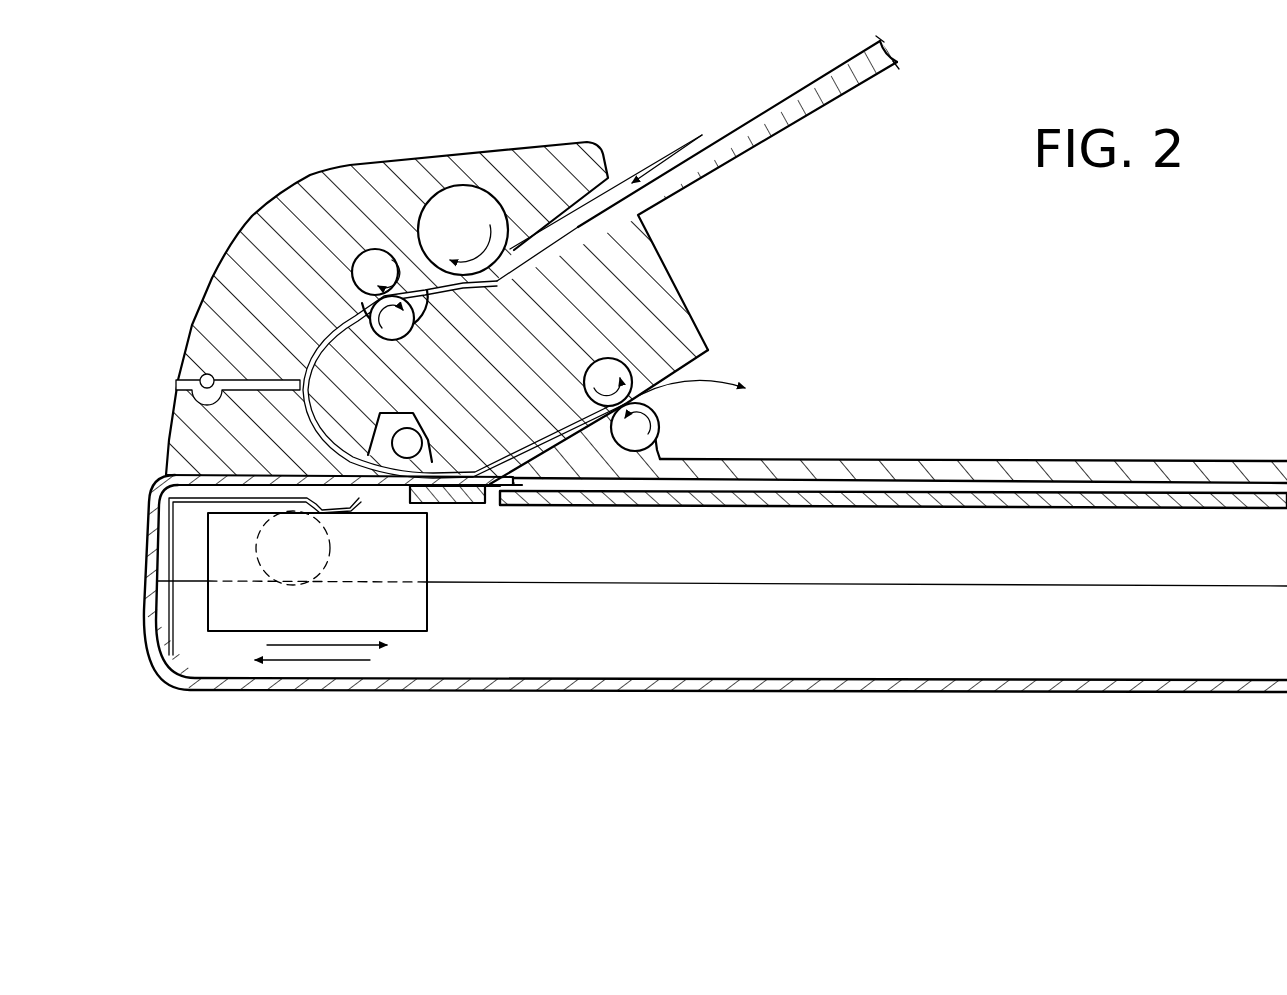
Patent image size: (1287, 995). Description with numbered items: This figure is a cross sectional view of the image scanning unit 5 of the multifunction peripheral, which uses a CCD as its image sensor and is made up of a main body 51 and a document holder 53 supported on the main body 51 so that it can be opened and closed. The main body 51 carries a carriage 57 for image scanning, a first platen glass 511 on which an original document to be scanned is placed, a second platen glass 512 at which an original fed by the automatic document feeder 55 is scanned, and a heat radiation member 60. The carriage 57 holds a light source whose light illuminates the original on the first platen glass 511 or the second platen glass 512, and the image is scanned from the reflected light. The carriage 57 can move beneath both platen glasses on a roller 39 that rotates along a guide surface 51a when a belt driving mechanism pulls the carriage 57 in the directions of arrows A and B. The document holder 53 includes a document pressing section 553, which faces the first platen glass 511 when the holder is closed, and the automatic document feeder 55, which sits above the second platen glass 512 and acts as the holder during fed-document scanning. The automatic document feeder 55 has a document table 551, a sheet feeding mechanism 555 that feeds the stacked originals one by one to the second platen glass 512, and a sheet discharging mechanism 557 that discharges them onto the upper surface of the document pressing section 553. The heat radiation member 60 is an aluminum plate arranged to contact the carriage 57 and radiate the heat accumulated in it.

The image scanning unit 5 is at (778, 744).
The main body 51 is at (138, 658).
The guide surface 51a is at (965, 580).
The document holder 53 is at (1127, 370).
The automatic document feeder 55 is at (441, 146).
The document table 551 is at (791, 131).
The document pressing section 553 is at (975, 465).
The sheet feeding mechanism 555 is at (398, 296).
The sheet discharging mechanism 557 is at (660, 425).
The carriage 57 is at (428, 608).
The roller 39 is at (305, 562).
The heat radiation member 60 is at (153, 541).
The first platen glass 511 is at (710, 506).
The second platen glass 512 is at (462, 500).